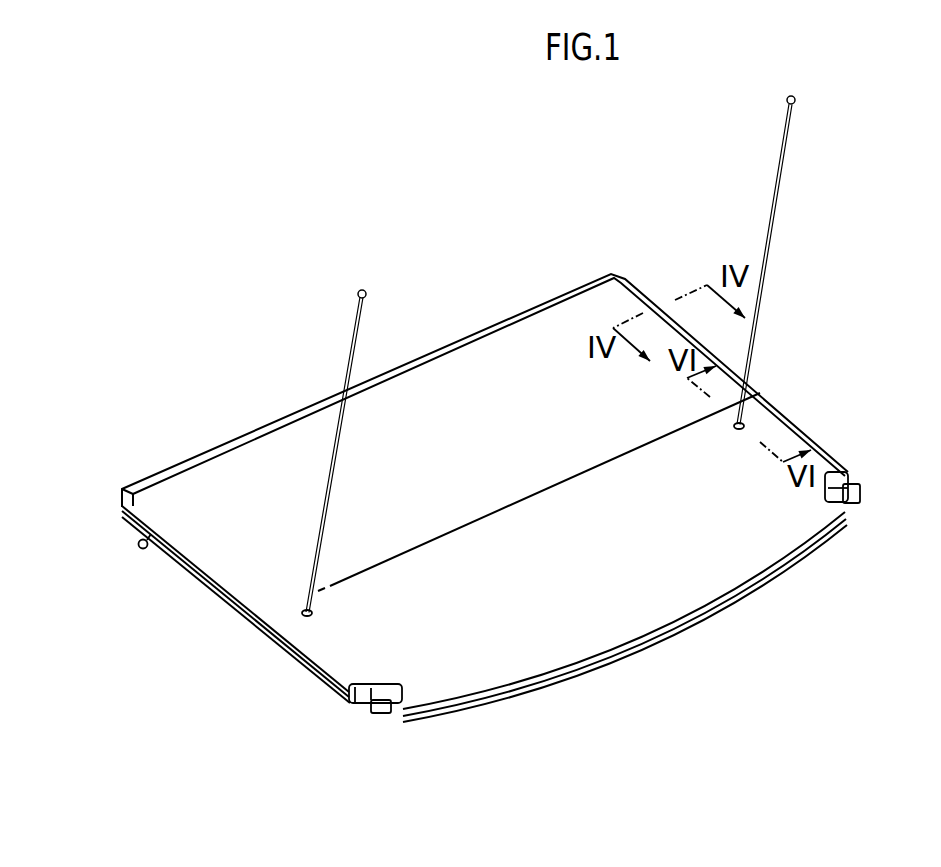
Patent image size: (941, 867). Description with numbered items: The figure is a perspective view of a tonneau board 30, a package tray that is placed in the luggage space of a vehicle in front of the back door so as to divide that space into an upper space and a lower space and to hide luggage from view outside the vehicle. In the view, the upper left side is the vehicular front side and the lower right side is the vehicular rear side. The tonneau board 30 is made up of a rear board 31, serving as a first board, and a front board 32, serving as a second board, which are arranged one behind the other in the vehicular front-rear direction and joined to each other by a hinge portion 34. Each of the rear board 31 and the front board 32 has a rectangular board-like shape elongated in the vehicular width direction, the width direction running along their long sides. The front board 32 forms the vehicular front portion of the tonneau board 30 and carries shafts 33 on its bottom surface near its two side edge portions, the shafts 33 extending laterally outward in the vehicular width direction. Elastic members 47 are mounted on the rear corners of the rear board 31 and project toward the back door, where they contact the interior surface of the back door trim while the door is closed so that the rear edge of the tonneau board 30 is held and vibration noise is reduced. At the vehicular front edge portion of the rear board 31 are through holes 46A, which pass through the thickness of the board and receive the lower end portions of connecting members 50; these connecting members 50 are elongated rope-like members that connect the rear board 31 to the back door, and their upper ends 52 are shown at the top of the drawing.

The tonneau board 30 is at (261, 421).
The rear board 31 is at (341, 652).
The front board 32 is at (234, 565).
The shaft 33 is at (140, 542).
The hinge portion 34 is at (448, 532).
The through hole 46A is at (300, 603).
The elastic member 47 is at (378, 716).
The connecting member 50 is at (372, 340).
The string end loop 52 is at (361, 291).